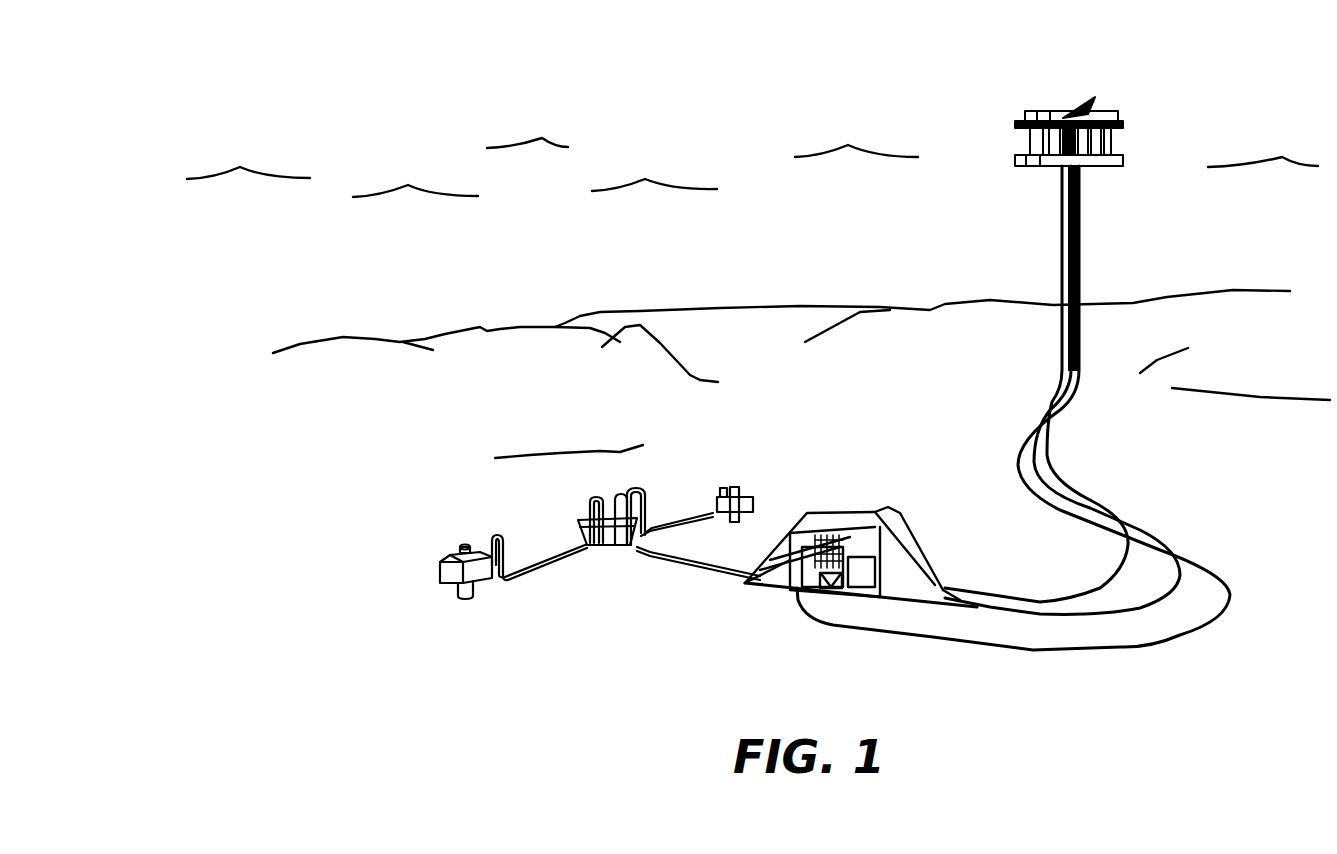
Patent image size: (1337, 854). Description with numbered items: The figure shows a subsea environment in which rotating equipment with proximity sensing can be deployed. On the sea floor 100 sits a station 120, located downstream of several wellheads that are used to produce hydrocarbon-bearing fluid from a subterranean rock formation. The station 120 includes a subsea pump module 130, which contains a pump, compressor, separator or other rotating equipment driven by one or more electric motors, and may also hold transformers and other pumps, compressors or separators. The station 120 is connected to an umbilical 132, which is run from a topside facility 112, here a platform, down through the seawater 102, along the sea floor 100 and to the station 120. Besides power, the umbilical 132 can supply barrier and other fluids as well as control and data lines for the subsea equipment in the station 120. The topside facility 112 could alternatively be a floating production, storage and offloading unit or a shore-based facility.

The sea floor 100 is at (1202, 480).
The seawater 102 is at (918, 262).
The topside facility 112 is at (1105, 139).
The station 120 is at (800, 455).
The subsea pump module 130 is at (790, 575).
The umbilical 132 is at (1033, 650).